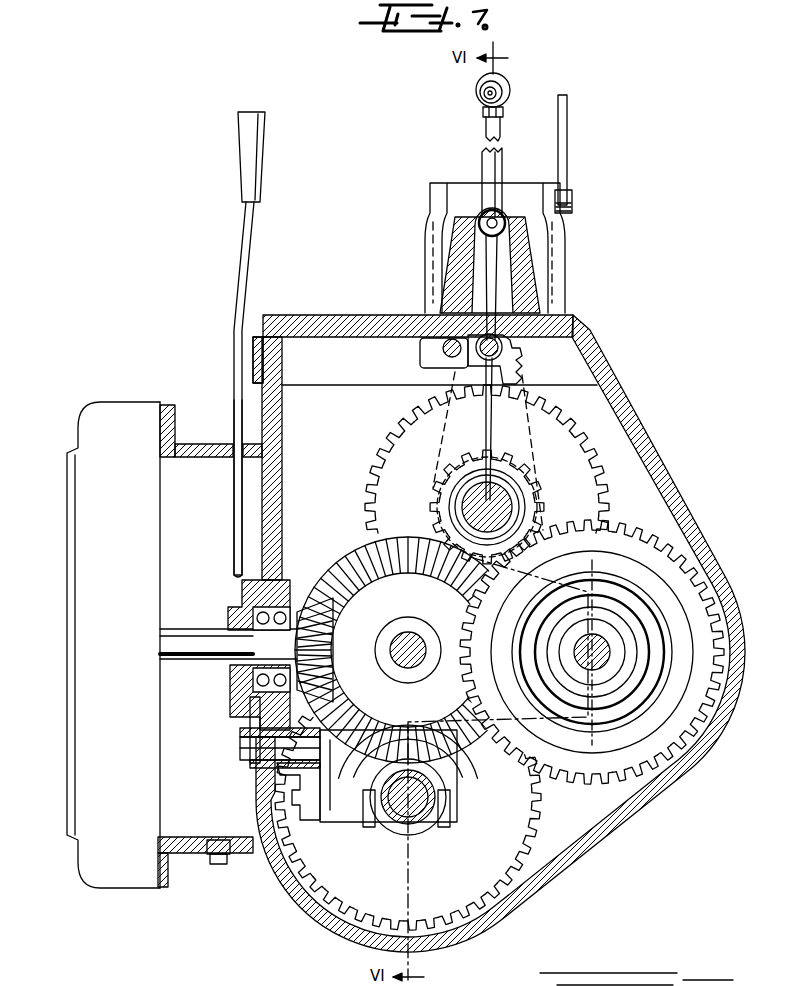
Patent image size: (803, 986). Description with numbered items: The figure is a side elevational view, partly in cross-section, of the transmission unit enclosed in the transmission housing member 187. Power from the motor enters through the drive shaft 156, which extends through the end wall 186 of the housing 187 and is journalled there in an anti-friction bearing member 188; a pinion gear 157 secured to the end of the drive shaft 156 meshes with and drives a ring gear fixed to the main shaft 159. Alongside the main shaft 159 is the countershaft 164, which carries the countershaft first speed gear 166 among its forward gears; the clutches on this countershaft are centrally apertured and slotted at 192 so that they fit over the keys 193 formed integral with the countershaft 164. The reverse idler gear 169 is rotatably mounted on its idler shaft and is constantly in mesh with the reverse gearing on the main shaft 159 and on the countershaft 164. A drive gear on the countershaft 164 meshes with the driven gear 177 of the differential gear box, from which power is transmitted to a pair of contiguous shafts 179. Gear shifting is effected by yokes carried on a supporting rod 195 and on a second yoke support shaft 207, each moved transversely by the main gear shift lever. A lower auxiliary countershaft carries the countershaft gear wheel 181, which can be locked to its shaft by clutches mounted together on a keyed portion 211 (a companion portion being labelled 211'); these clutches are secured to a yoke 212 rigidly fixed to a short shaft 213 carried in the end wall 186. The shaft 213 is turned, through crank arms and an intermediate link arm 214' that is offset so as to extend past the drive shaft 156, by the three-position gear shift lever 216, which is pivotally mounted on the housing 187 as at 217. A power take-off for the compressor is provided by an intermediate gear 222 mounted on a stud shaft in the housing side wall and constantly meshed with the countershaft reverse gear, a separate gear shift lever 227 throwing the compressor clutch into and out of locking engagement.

The gear shift lever 227 is at (565, 168).
The gear shift lever 216 is at (251, 244).
The pivot mounting 217 is at (252, 335).
The intermediate link arm 214' is at (209, 488).
The second yoke support shaft 207 is at (440, 347).
The intermediate gear 222 is at (447, 367).
The supporting rod 195 is at (505, 362).
The countershaft first speed gear 166 is at (572, 457).
The slot 192 is at (466, 470).
The keys 193 is at (514, 470).
The countershaft 164 is at (433, 507).
The end wall 186 is at (273, 490).
The reverse idler gear 169 is at (322, 557).
The pinion gear 157 is at (288, 614).
The drive shaft 156 is at (183, 637).
The anti-friction bearing member 188 is at (272, 625).
The main shaft 159 is at (408, 640).
The contiguous shafts 179 is at (603, 640).
The driven gear 177 is at (587, 790).
The countershaft gear wheel 181 is at (492, 853).
The short shaft 213 is at (262, 765).
The yoke 212 is at (333, 770).
The keyed portion 211 is at (359, 833).
The bearing block 211' is at (457, 834).
The transmission housing member 187 is at (288, 896).